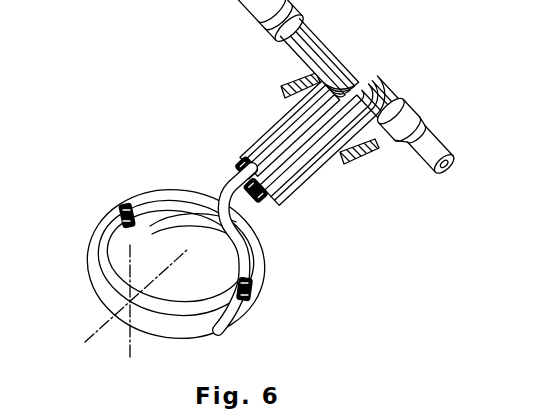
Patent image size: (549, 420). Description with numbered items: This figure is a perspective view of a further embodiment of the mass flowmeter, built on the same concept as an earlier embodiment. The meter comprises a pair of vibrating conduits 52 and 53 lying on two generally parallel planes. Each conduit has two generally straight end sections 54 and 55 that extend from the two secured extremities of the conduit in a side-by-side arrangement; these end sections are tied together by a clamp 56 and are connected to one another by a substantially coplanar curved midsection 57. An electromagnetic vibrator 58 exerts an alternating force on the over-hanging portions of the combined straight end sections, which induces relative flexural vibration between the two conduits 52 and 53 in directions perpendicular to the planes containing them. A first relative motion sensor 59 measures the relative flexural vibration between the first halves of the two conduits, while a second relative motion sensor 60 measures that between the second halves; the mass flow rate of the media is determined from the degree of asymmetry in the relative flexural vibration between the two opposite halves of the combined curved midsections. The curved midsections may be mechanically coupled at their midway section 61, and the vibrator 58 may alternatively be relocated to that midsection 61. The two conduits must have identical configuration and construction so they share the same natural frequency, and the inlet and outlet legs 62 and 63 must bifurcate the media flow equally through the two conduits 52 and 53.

The vibrating conduit 52 is at (256, 240).
The vibrating conduit 53 is at (258, 288).
The generally straight end section 54 is at (299, 109).
The generally straight end section 55 is at (316, 120).
The clamp 56 is at (247, 168).
The curved midsection 57 is at (92, 259).
The electromagnetic vibrator 58 is at (255, 191).
The first relative motion sensor 59 is at (142, 208).
The second relative motion sensor 60 is at (228, 328).
The midway section 61 is at (98, 327).
The inlet leg 62 is at (272, 23).
The outlet leg 63 is at (416, 138).